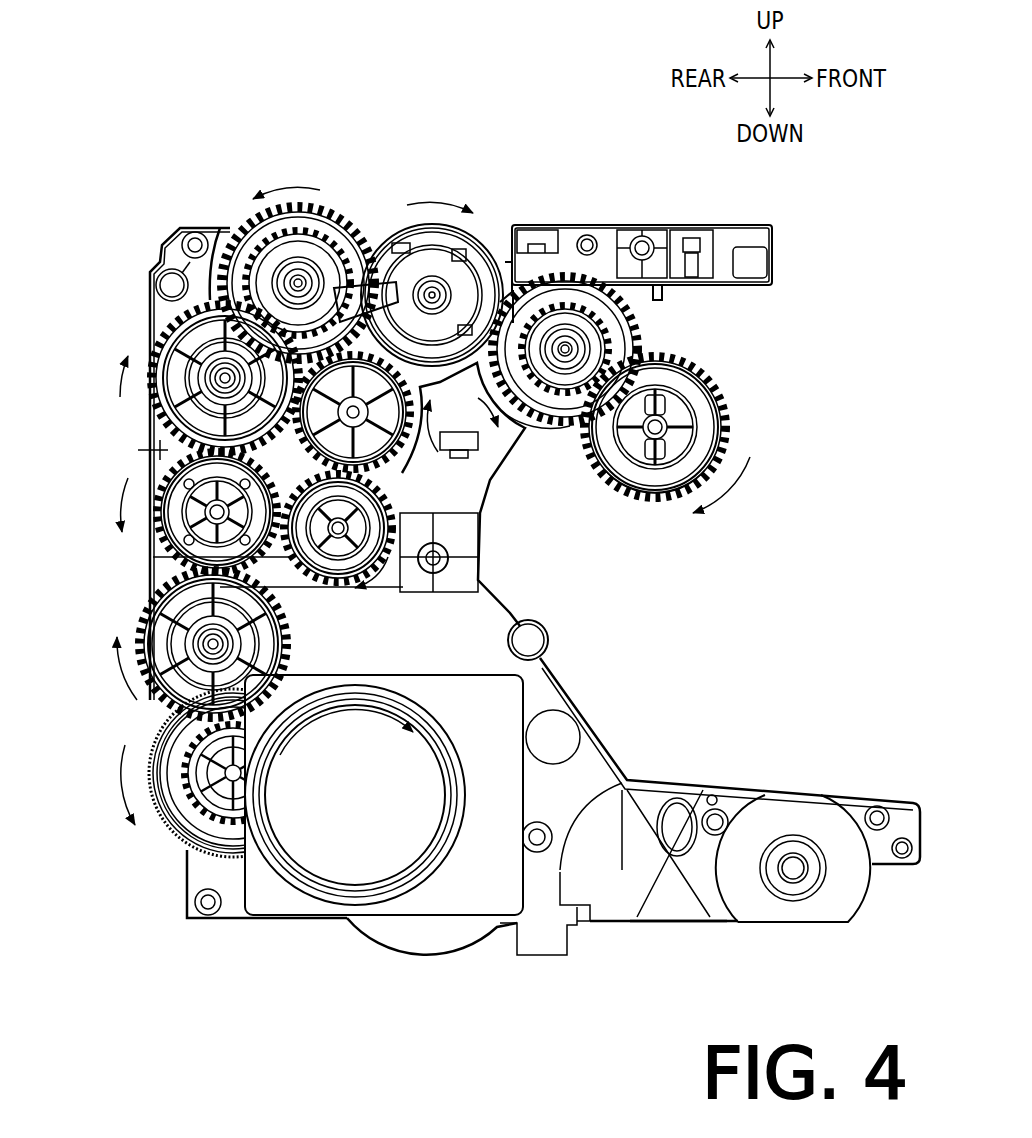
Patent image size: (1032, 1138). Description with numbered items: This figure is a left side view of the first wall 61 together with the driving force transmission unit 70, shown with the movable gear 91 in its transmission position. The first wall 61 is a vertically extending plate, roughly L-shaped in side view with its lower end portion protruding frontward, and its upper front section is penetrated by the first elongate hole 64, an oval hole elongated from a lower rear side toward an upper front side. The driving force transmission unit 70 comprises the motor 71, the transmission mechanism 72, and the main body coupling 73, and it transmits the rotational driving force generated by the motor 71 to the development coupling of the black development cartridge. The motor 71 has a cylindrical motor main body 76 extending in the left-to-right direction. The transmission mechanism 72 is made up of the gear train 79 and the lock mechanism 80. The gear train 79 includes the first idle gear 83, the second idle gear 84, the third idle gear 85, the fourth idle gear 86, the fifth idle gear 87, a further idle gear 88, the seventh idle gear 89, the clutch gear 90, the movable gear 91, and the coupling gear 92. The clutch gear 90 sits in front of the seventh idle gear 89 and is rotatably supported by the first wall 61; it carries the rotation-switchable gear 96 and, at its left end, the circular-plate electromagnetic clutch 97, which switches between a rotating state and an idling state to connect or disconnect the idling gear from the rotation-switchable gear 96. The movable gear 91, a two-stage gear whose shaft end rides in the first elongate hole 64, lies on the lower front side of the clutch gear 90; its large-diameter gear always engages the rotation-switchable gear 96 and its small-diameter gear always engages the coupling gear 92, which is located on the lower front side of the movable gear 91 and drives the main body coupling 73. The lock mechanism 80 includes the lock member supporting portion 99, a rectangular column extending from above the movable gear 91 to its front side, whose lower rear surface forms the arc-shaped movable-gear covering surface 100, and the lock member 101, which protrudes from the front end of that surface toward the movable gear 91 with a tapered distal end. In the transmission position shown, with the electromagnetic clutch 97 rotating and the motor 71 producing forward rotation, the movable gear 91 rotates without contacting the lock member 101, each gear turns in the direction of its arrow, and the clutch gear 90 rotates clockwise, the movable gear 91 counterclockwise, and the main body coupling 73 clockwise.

The driving force transmission unit 70 is at (222, 204).
The transmission mechanism 72 is at (205, 207).
The seventh idle gear 89 is at (330, 214).
The electromagnetic clutch 97 is at (393, 280).
The clutch gear 90 is at (483, 230).
The rotation-switchable gear 96 is at (493, 265).
The movable-gear covering surface 100 is at (598, 267).
The lock mechanism 80 is at (708, 222).
The lock member supporting portion 99 is at (745, 230).
The lock member 101 is at (660, 297).
The first elongate hole 64 is at (575, 345).
The main body coupling 73 is at (680, 417).
The movable gear 91 is at (540, 424).
The coupling gear 92 is at (648, 497).
The gear 88 is at (150, 350).
The third idle gear 85 is at (150, 470).
The fifth idle gear 87 is at (400, 465).
The fourth idle gear 86 is at (450, 532).
The second idle gear 84 is at (150, 625).
The gear train 79 is at (135, 726).
The first idle gear 83 is at (160, 825).
The motor 71 is at (290, 888).
The motor main body 76 is at (322, 868).
The first wall 61 is at (658, 923).